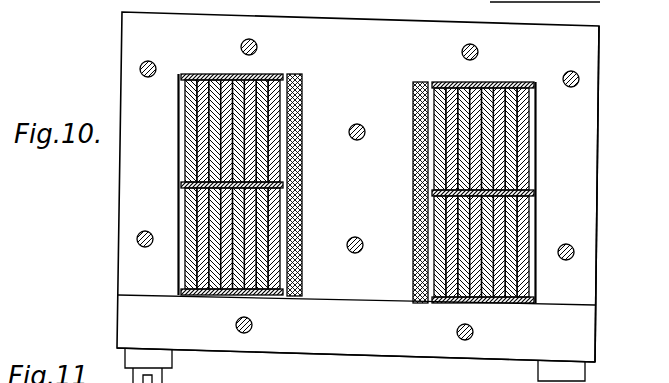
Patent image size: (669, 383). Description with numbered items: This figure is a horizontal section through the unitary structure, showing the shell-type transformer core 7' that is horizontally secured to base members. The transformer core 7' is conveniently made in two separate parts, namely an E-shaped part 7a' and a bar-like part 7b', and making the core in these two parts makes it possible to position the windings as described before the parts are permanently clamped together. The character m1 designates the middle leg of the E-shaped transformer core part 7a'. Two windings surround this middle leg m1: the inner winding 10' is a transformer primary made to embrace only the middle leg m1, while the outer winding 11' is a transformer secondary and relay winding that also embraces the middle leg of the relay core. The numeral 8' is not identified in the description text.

The shell-type transformer core 7' is at (346, 187).
The E-shaped part 7a' is at (610, 194).
The bar-like part 7b' is at (371, 328).
The foot 8' is at (355, 366).
The inner winding 10' is at (310, 185).
The outer winding 11' is at (232, 308).
The middle leg m1 is at (351, 188).